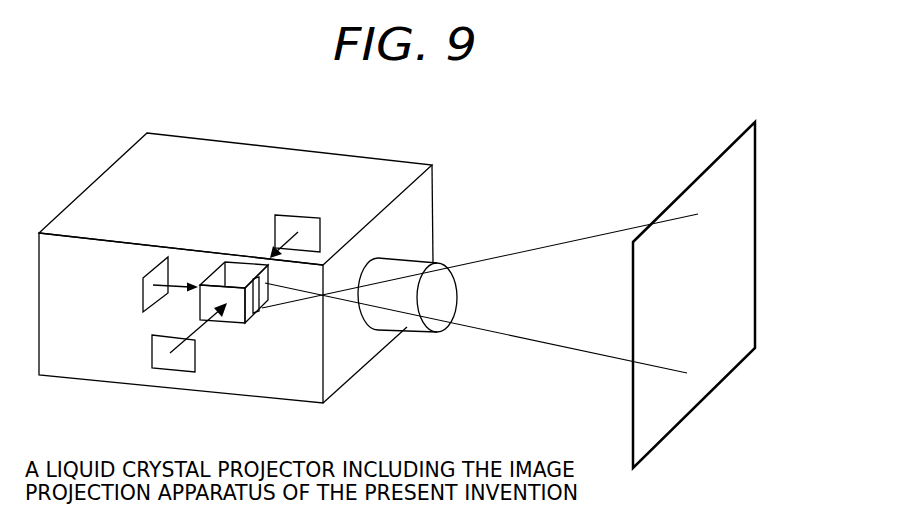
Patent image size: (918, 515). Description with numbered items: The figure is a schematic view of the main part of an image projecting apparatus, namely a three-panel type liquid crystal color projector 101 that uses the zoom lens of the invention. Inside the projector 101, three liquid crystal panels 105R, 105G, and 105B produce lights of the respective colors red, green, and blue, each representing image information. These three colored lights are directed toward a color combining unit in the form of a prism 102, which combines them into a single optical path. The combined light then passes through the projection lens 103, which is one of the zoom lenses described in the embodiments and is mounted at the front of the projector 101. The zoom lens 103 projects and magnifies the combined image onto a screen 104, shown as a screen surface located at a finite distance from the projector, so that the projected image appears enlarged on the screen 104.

The liquid crystal color projector 101 is at (203, 138).
The prism 102 is at (237, 325).
The zoom lens 103 is at (412, 333).
The screen 104 is at (697, 178).
The liquid crystal panel for G 105G is at (143, 287).
The liquid crystal panel for R 105R is at (152, 347).
The liquid crystal panel for B 105B is at (300, 215).